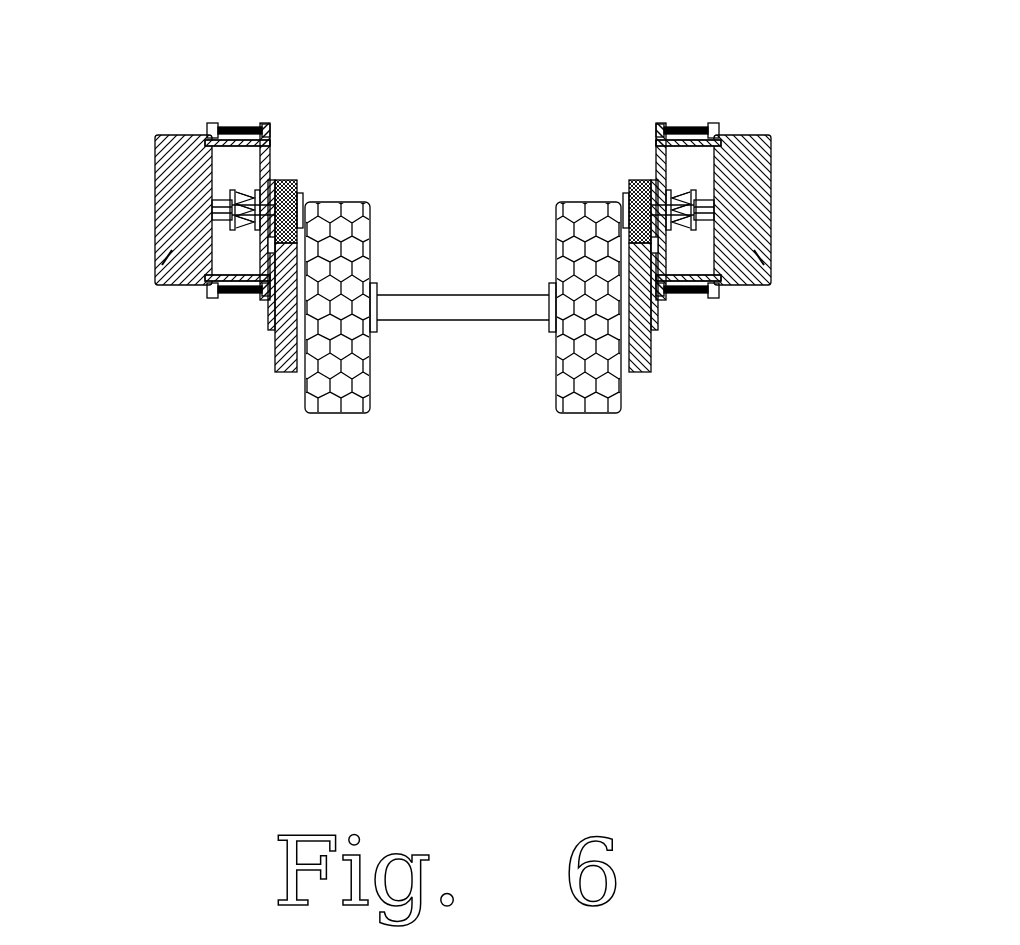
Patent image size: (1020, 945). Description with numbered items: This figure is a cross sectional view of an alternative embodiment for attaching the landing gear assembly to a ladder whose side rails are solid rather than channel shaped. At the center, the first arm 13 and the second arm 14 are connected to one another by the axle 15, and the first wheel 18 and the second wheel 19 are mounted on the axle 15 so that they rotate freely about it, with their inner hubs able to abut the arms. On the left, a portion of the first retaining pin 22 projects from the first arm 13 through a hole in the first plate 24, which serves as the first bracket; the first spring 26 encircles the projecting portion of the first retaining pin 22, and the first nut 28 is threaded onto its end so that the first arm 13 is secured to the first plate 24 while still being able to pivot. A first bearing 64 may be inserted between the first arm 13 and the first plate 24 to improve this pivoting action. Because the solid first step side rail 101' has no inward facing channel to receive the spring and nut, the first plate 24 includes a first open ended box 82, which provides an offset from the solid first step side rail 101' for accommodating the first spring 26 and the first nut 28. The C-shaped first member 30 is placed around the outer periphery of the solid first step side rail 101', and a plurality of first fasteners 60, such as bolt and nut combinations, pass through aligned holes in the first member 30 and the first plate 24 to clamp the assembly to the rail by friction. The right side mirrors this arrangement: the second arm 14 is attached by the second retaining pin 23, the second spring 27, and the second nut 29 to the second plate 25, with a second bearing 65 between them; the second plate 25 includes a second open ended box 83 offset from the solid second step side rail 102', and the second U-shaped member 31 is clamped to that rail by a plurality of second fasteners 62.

The first arm 13 is at (275, 362).
The second arm 14 is at (731, 360).
The axle 15 is at (472, 306).
The first wheel 18 is at (343, 398).
The second wheel 19 is at (653, 364).
The first retaining pin 22 is at (301, 193).
The second retaining pin 23 is at (579, 185).
The first plate 24 is at (260, 125).
The second plate 25 is at (609, 154).
The first spring 26 is at (236, 297).
The second spring 27 is at (717, 353).
The first nut 28 is at (200, 287).
The second nut 29 is at (748, 255).
The first member 30 is at (155, 213).
The second U-shaped member 31 is at (786, 210).
The first fasteners 60 is at (216, 125).
The second fasteners 62 is at (734, 104).
The first bearing 64 is at (276, 180).
The second bearing 65 is at (590, 197).
The first open ended box 82 is at (233, 125).
The second open ended box 83 is at (727, 78).
The solid first step side rail 101' is at (99, 279).
The solid second step side rail 102' is at (831, 279).